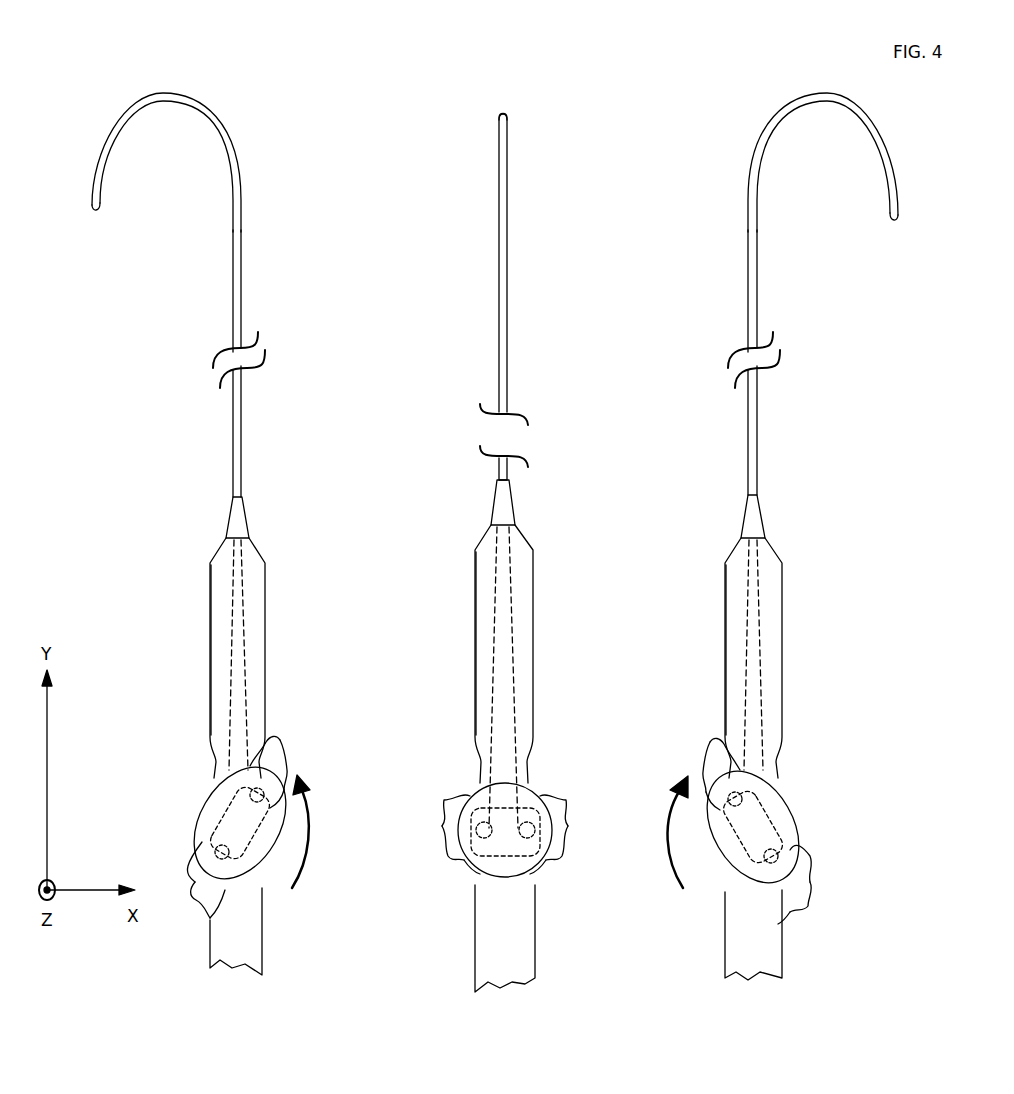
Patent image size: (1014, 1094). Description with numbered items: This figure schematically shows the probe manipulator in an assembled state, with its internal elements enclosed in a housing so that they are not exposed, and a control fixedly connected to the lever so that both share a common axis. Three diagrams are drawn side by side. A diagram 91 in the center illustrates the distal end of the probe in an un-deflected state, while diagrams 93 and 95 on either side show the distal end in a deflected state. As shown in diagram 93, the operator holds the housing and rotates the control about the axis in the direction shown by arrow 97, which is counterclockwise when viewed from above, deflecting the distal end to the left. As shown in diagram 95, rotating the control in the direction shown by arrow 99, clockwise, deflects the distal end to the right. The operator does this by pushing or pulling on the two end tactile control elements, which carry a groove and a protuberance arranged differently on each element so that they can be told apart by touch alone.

The diagram 91 is at (474, 195).
The diagram 93 is at (78, 132).
The diagram 95 is at (726, 148).
The arrow 97 is at (311, 790).
The arrow 99 is at (668, 800).